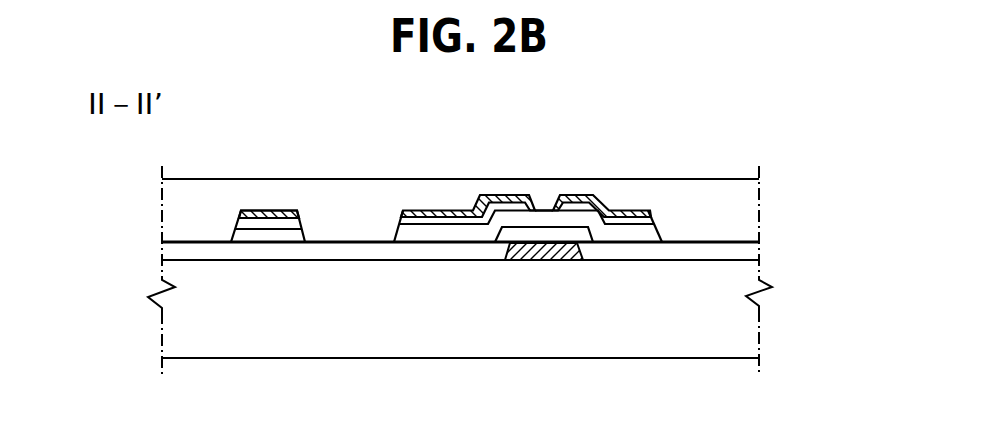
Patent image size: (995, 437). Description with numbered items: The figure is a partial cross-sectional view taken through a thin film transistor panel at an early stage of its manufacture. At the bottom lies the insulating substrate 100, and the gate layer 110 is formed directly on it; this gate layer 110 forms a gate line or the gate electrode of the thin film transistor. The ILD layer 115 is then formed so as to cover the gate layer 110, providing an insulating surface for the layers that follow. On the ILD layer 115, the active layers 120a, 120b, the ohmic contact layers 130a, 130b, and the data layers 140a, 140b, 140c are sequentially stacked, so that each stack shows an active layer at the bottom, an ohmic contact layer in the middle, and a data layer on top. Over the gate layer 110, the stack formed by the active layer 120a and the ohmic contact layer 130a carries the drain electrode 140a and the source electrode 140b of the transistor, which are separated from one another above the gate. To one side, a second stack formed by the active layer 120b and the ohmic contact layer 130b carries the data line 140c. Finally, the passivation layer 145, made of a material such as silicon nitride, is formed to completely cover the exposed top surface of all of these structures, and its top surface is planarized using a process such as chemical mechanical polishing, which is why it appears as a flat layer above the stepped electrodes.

The insulating substrate 100 is at (747, 322).
The gate layer 110 is at (528, 256).
The ILD layer 115 is at (748, 251).
The active layer 120a is at (653, 232).
The active layer 120b is at (243, 236).
The ohmic contact layer 130a is at (621, 222).
The ohmic contact layer 130b is at (266, 226).
The drain electrode 140a is at (500, 196).
The source electrode 140b is at (582, 196).
The data line 140c is at (290, 216).
The passivation layer 145 is at (747, 220).